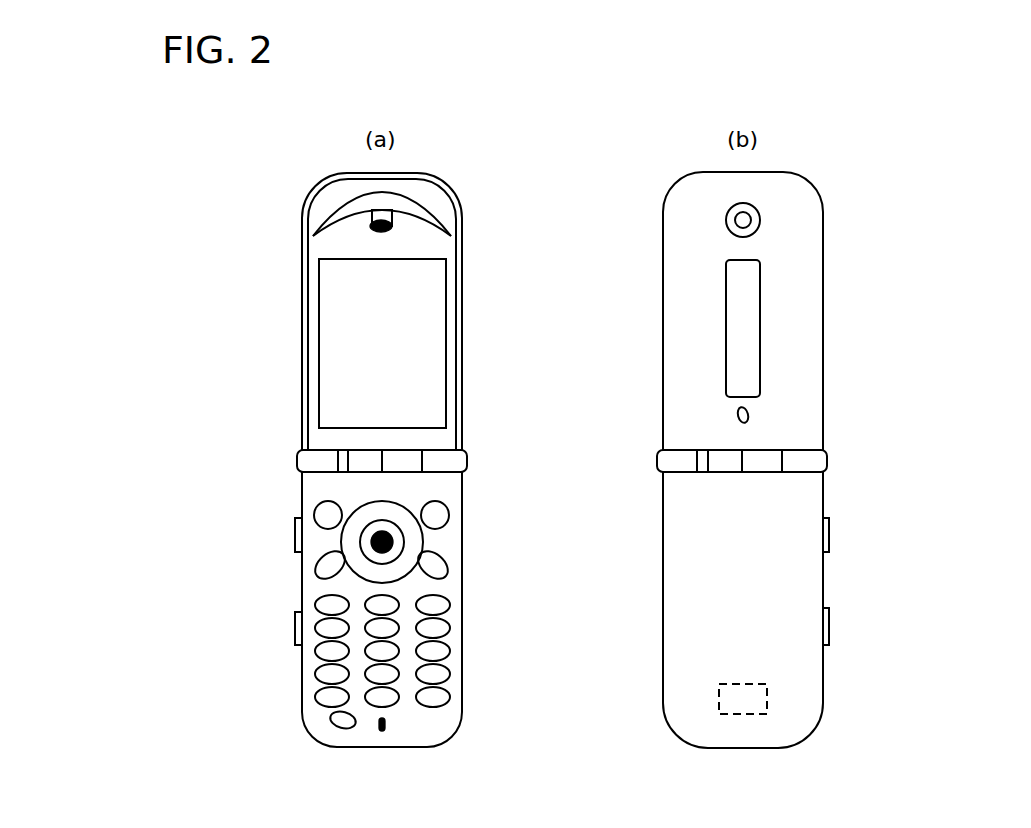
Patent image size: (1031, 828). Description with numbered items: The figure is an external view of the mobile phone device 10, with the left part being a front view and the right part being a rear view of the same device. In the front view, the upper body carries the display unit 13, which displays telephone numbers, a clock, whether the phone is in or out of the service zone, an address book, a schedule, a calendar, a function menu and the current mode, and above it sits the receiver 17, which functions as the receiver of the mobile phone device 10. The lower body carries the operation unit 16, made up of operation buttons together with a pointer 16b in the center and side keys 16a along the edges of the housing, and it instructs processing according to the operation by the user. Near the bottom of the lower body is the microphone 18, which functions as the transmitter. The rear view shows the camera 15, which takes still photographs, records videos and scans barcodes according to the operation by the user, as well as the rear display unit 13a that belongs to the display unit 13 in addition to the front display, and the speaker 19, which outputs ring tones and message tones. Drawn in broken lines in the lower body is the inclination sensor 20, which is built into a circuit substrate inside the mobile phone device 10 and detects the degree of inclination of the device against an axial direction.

The mobile phone device 10 is at (240, 164).
The display unit 13 is at (320, 352).
The rear display unit 13a is at (760, 300).
The camera 15 is at (728, 226).
The operation unit 16 is at (447, 616).
The side keys 16a is at (296, 526).
The pointer 16b is at (388, 540).
The receiver 17 is at (386, 223).
The microphone 18 is at (380, 731).
The speaker 19 is at (750, 410).
The inclination sensor 20 is at (720, 700).